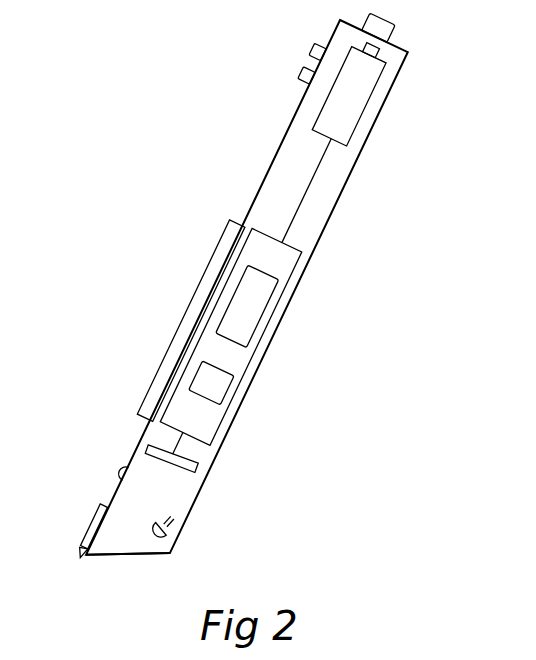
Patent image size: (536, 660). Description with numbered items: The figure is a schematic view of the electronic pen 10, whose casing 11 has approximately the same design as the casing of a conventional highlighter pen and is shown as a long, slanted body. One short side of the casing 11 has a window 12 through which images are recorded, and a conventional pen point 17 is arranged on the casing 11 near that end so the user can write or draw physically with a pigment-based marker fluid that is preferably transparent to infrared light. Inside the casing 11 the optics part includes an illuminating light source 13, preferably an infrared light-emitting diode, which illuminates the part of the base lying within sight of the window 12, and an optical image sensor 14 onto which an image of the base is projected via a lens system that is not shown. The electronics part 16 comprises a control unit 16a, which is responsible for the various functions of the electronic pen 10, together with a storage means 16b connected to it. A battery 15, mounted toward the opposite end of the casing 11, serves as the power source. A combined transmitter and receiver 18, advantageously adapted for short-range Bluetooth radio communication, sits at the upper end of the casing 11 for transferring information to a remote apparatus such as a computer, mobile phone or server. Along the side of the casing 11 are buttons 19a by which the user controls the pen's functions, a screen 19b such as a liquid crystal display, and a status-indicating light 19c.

The electronic pen 10 is at (218, 158).
The casing 11 is at (335, 208).
The window 12 is at (133, 553).
The illuminating light source 13 is at (162, 533).
The optical image sensor 14 is at (193, 470).
The battery 15 is at (355, 106).
The electronics part 16 is at (295, 265).
The control unit 16a is at (255, 310).
The storage means 16b is at (222, 387).
The pen point 17 is at (82, 545).
The combined transmitter and receiver 18 is at (392, 28).
The buttons 19a is at (305, 49).
The screen 19b is at (192, 312).
The status-indicating light 19c is at (116, 470).